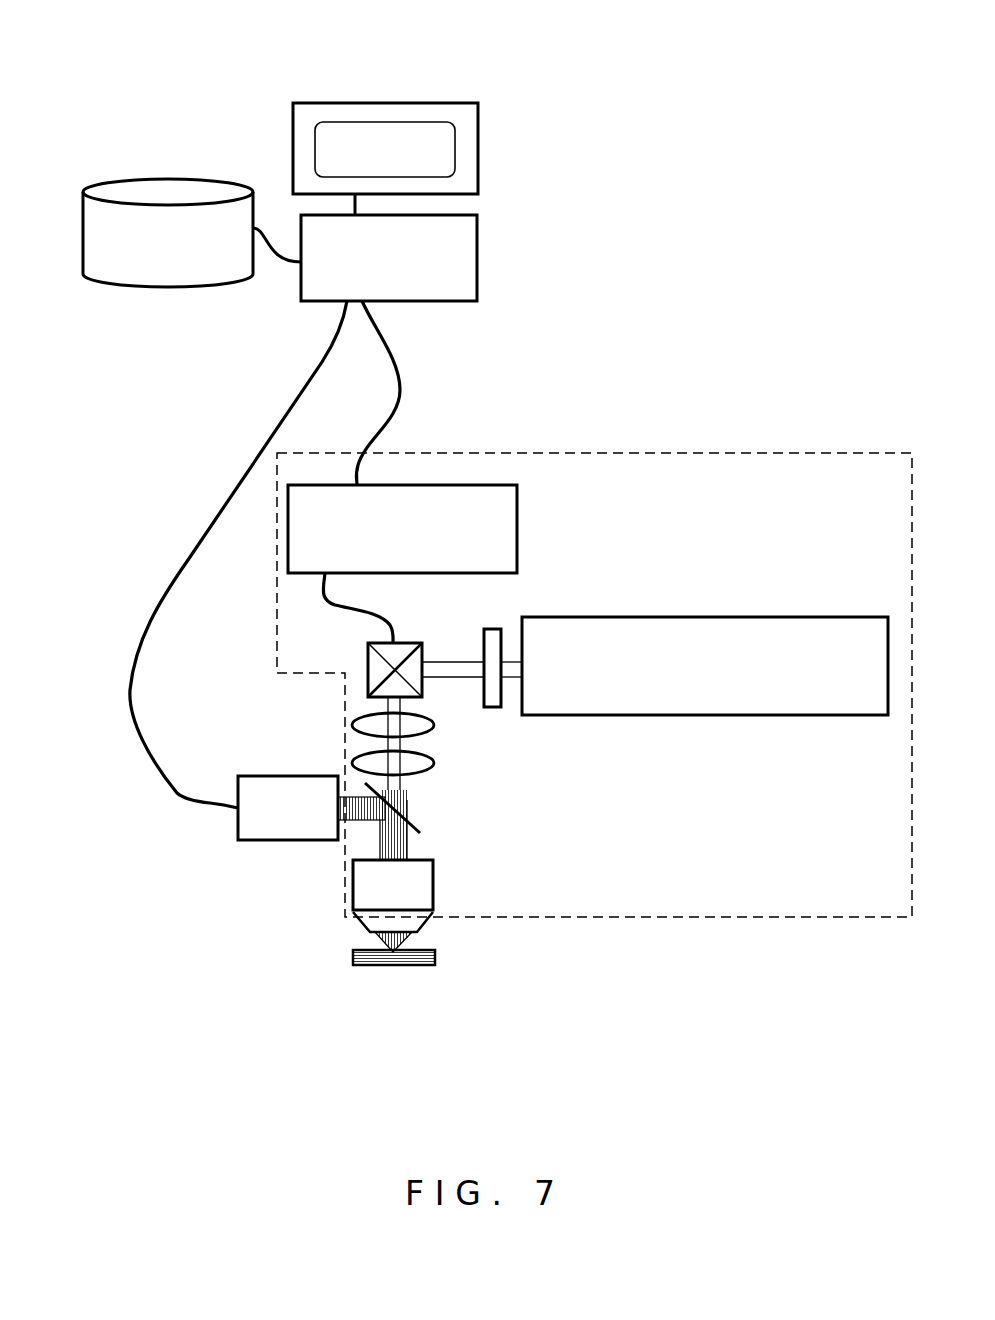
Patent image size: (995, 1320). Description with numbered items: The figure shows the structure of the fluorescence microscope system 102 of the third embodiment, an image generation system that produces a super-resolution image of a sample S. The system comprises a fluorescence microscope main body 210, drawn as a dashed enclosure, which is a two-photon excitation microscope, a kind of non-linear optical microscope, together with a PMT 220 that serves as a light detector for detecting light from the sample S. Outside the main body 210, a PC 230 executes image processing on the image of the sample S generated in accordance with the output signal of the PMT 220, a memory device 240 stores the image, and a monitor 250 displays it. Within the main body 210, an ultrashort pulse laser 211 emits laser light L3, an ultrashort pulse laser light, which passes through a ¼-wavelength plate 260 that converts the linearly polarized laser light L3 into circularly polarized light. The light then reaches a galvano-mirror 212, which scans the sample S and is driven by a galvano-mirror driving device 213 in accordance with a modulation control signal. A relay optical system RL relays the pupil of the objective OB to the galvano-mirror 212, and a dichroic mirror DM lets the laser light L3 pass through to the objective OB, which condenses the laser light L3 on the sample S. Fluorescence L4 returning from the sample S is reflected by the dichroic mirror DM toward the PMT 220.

The fluorescence microscope system 102 is at (752, 55).
The monitor 250 is at (478, 146).
The PC 230 is at (478, 253).
The memory device 240 is at (172, 290).
The fluorescence microscope main body 210 is at (633, 452).
The galvano-mirror driving device 213 is at (517, 528).
The ultrashort pulse laser 211 is at (725, 615).
The ¼-wavelength plate 260 is at (493, 628).
The galvano-mirror 212 is at (368, 660).
The PMT 220 is at (287, 842).
The laser light L3 is at (447, 660).
The fluorescence L4 is at (378, 848).
The relay optical system RL is at (441, 707).
The dichroic mirror DM is at (420, 828).
The objective OB is at (433, 890).
The sample S is at (435, 955).